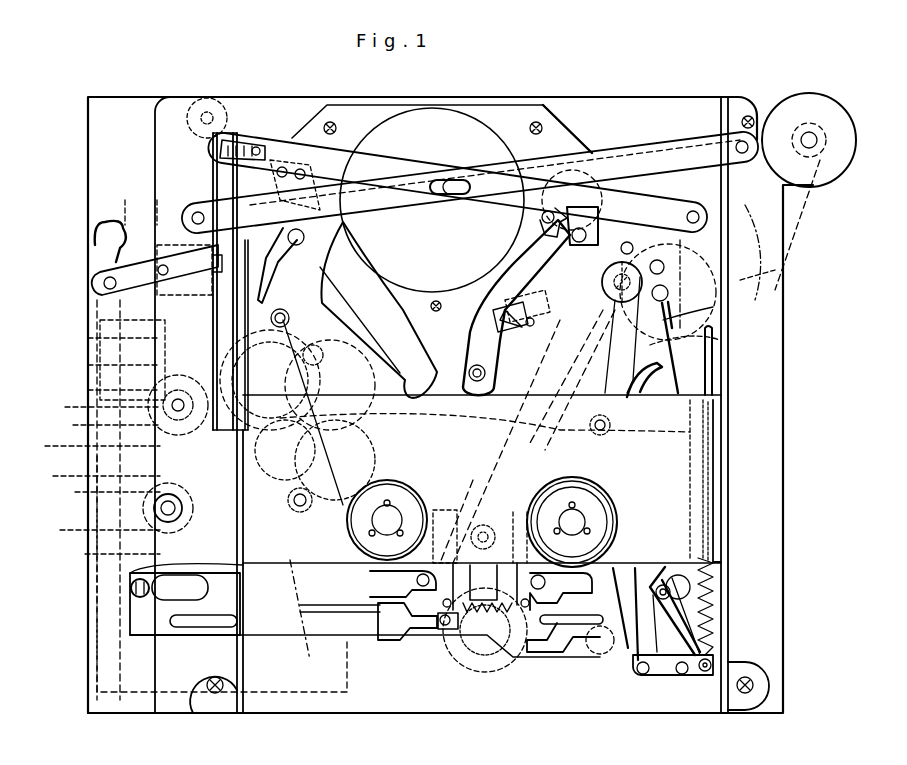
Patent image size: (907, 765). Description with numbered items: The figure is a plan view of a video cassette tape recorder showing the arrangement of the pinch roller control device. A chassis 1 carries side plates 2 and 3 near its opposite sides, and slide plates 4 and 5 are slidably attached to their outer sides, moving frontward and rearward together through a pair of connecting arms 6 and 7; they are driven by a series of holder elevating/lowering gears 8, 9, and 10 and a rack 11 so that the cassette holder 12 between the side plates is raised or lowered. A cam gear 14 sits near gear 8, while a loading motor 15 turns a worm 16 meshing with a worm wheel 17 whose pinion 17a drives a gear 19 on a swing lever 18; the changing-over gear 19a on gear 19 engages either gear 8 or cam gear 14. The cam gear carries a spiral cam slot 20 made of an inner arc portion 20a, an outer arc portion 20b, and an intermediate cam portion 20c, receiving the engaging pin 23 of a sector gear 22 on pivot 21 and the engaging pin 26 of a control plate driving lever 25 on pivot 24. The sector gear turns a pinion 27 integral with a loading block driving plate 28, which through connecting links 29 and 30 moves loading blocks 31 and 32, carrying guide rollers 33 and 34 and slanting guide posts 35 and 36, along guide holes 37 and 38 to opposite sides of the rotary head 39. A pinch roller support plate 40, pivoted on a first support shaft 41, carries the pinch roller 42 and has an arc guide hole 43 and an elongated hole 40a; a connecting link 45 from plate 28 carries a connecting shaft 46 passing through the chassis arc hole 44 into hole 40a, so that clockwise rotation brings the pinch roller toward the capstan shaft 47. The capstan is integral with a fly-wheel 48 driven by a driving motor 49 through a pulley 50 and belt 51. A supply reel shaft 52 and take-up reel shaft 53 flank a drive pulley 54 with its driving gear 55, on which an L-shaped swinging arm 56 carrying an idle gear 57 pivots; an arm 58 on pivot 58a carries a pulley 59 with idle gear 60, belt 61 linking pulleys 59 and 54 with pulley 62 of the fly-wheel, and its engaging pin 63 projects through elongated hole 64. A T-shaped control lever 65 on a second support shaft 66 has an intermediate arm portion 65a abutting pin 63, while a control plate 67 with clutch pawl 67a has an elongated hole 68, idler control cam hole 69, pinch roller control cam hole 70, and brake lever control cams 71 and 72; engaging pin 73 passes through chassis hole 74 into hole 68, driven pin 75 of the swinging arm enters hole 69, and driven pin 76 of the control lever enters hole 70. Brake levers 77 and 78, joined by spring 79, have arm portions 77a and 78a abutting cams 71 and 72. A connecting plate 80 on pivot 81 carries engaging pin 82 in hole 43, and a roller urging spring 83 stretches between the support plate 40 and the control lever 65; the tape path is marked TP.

The chassis 1 is at (90, 132).
The side plate 2 is at (238, 713).
The side plate 3 is at (722, 712).
The slide plate 4 is at (150, 560).
The slide plate 5 is at (722, 550).
The connecting arm 6 is at (618, 148).
The connecting arm 7 is at (662, 200).
The holder elevating/lowering gear 8 is at (102, 529).
The holder elevating/lowering gear 9 is at (150, 510).
The holder elevating/lowering gear 10 is at (150, 460).
The rack 11 is at (158, 330).
The cassette holder 12 is at (280, 570).
The cam gear 14 is at (212, 332).
The loading motor 15 is at (109, 337).
The worm 16 is at (108, 364).
The worm wheel 17 is at (109, 389).
The pinion 17a is at (95, 405).
The swing lever 18 is at (95, 474).
The gear 19 is at (107, 490).
The changing-over gear 19a is at (100, 423).
The spiral cam slot 20 is at (307, 406).
The inner small-diameter concentric circular arc portion 20a is at (330, 385).
The outer large-diameter concentric circular arc portion 20b is at (335, 454).
The intermediate cam portion 20c is at (285, 441).
The pivot 21 is at (346, 473).
The sector gear 22 is at (447, 516).
The engaging pin 23 is at (305, 496).
The pivot 24 is at (90, 444).
The control plate driving lever 25 is at (106, 553).
The engaging pin 26 is at (270, 380).
The pinion 27 is at (480, 422).
The loading block driving plate 28 is at (460, 300).
The connecting link 29 is at (382, 308).
The connecting link 30 is at (540, 250).
The loading block 31 is at (270, 220).
The loading block 32 is at (605, 207).
The guide roller 33 is at (322, 195).
The guide roller 34 is at (465, 183).
The slanting guide post 35 is at (345, 238).
The slanting guide post 36 is at (540, 223).
The guide hole 37 is at (274, 283).
The guide hole 38 is at (500, 290).
The rotary head 39 is at (445, 130).
The pinch roller support plate 40 is at (732, 325).
The elongated hole 40a is at (722, 437).
The first support shaft 41 is at (722, 392).
The pinch roller 42 is at (545, 300).
The circular arc guide elongated hole 43 is at (625, 370).
The circular arc guide elongated hole 44 is at (578, 492).
The connecting link 45 is at (527, 436).
The connecting shaft 46 is at (590, 430).
The capstan shaft 47 is at (665, 262).
The fly-wheel 48 is at (780, 270).
The driving motor 49 is at (848, 155).
The pulley 50 is at (820, 137).
The belt 51 is at (800, 205).
The supply reel shaft 52 is at (400, 492).
The take-up reel shaft 53 is at (542, 497).
The drive pulley 54 is at (505, 675).
The driving gear 55 is at (488, 668).
The L-shaped swinging arm 56 is at (525, 525).
The idle gear 57 is at (497, 511).
The arm 58 is at (722, 514).
The pivot 58a is at (722, 538).
The pulley 59 is at (722, 494).
The idle gear 60 is at (722, 470).
The belt 61 is at (716, 346).
The pulley 62 is at (672, 297).
The engaging pin 63 is at (735, 603).
The elongated hole 64 is at (716, 597).
The control lever 65 is at (680, 690).
The intermediate arm portion 65a is at (730, 660).
The second support shaft 66 is at (686, 672).
The control plate 67 is at (285, 628).
The clutch pawl 67a is at (716, 580).
The elongated hole 68 is at (135, 610).
The idler control cam hole 69 is at (430, 640).
The pinch roller control cam hole 70 is at (552, 660).
The brake lever control cam 71 is at (350, 592).
The brake lever control cam 72 is at (645, 660).
The engaging pin 73 is at (130, 590).
The elongated hole 74 is at (165, 630).
The driven pin 75 is at (470, 620).
The driven pin 76 is at (590, 660).
The brake lever 77 is at (375, 565).
The arm portion 77a is at (400, 628).
The brake lever 78 is at (573, 521).
The arm portion 78a is at (573, 645).
The spring 79 is at (478, 650).
The connecting plate 80 is at (642, 632).
The pivot 81 is at (660, 670).
The engaging pin 82 is at (722, 414).
The roller urging spring 83 is at (730, 625).
The tape path TP is at (733, 368).